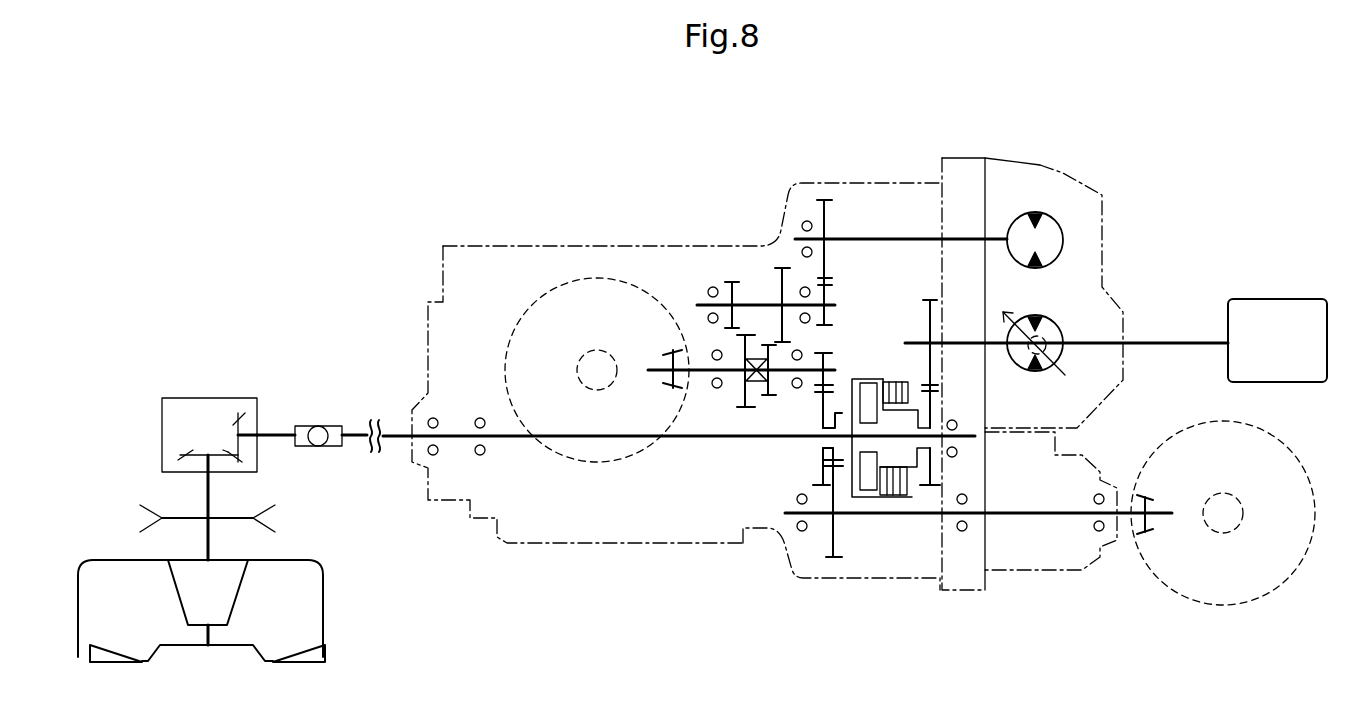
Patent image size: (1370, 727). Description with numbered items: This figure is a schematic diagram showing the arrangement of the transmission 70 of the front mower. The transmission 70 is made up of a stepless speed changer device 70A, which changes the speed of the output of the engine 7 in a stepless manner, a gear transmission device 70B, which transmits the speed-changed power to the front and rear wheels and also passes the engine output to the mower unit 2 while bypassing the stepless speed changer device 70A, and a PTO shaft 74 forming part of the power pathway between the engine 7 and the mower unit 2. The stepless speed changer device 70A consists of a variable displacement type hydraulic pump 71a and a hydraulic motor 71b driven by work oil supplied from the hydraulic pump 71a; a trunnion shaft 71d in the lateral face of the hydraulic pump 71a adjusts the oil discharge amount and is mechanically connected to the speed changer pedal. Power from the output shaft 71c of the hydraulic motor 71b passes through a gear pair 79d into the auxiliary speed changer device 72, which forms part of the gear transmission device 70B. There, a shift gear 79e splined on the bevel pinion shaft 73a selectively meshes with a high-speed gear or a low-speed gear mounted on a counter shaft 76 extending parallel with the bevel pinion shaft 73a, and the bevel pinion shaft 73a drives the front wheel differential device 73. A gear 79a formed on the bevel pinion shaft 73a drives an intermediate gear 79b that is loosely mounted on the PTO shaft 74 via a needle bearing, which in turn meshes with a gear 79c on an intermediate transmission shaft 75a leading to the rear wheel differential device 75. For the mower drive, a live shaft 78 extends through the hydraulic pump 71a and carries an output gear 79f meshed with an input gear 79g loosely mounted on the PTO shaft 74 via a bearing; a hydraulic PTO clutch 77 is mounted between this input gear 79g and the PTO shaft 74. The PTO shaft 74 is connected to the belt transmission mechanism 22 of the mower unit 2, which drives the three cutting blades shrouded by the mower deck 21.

The mower unit 2 is at (251, 530).
The mower deck 21 is at (308, 560).
The belt transmission mechanism 22 is at (178, 517).
The engine 7 is at (1272, 298).
The transmission 70 is at (798, 170).
The stepless speed changer device 70A is at (1110, 240).
The gear transmission device 70B is at (745, 550).
The hydraulic pump 71a is at (1062, 333).
The hydraulic motor 71b is at (1053, 217).
The output shaft 71c is at (865, 238).
The trunnion shaft 71d is at (1030, 350).
The auxiliary speed changer device 72 is at (742, 268).
The front wheel differential device 73 is at (613, 460).
The bevel pinion shaft 73a is at (700, 367).
The PTO shaft 74 is at (498, 438).
The rear wheel differential device 75 is at (1248, 602).
The intermediate transmission shaft 75a is at (1007, 515).
The counter shaft 76 is at (758, 303).
The hydraulic PTO clutch 77 is at (882, 505).
The live shaft 78 is at (967, 343).
The gear 79a is at (822, 355).
The intermediate gear 79b is at (822, 465).
The gear 79c is at (835, 560).
The gear pair 79d is at (833, 218).
The shift gear 79e is at (748, 410).
The output gear 79f is at (927, 302).
The input gear 79g is at (930, 467).